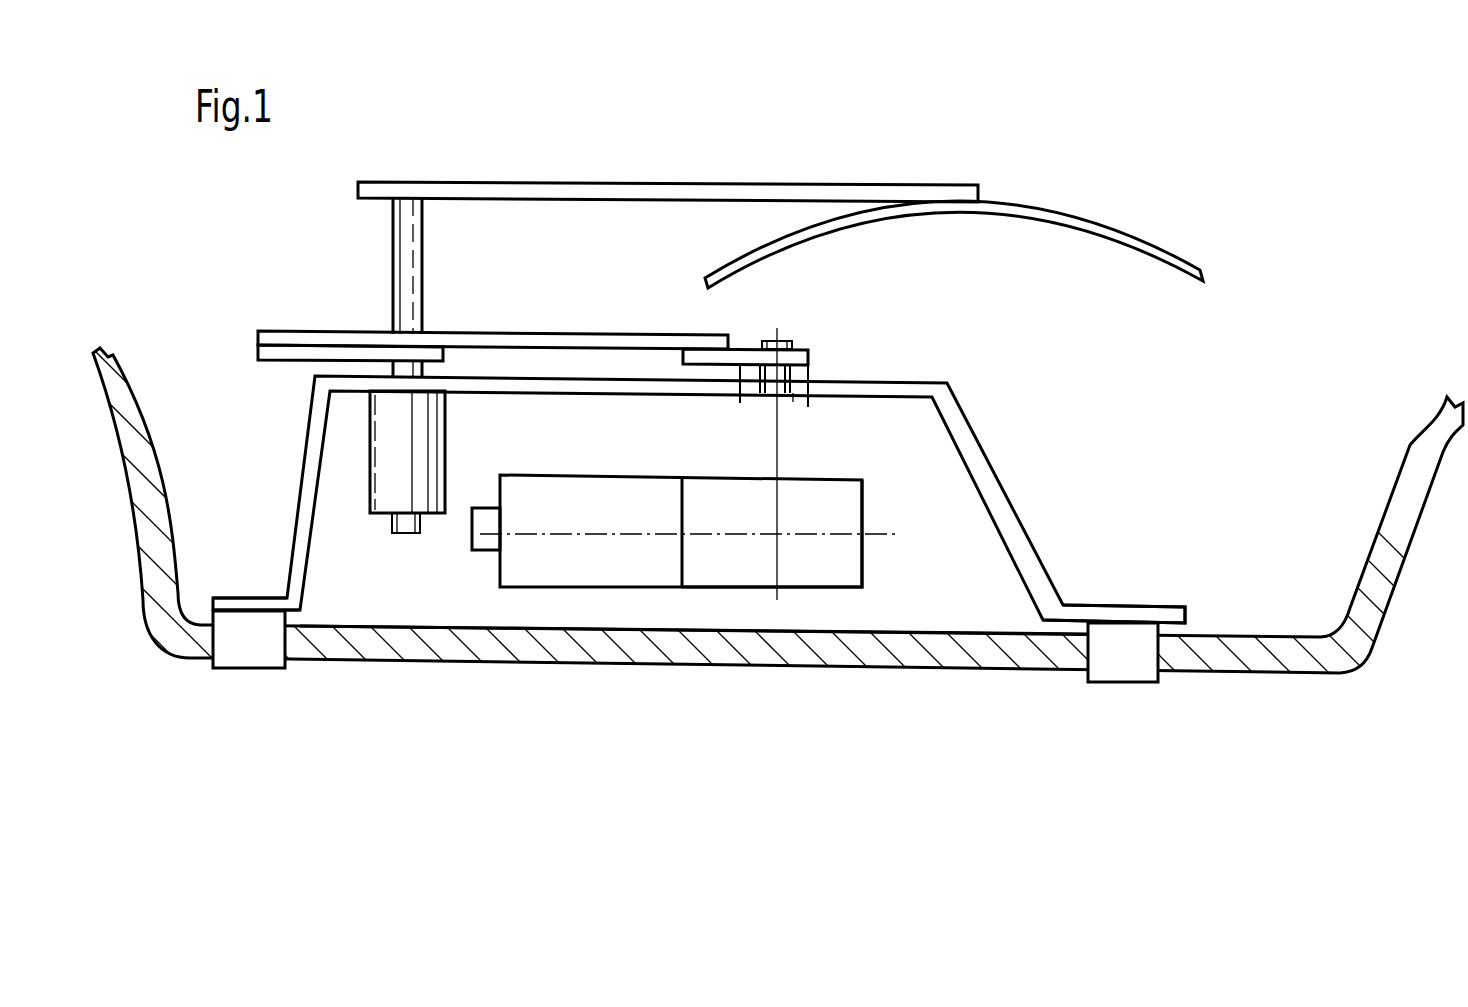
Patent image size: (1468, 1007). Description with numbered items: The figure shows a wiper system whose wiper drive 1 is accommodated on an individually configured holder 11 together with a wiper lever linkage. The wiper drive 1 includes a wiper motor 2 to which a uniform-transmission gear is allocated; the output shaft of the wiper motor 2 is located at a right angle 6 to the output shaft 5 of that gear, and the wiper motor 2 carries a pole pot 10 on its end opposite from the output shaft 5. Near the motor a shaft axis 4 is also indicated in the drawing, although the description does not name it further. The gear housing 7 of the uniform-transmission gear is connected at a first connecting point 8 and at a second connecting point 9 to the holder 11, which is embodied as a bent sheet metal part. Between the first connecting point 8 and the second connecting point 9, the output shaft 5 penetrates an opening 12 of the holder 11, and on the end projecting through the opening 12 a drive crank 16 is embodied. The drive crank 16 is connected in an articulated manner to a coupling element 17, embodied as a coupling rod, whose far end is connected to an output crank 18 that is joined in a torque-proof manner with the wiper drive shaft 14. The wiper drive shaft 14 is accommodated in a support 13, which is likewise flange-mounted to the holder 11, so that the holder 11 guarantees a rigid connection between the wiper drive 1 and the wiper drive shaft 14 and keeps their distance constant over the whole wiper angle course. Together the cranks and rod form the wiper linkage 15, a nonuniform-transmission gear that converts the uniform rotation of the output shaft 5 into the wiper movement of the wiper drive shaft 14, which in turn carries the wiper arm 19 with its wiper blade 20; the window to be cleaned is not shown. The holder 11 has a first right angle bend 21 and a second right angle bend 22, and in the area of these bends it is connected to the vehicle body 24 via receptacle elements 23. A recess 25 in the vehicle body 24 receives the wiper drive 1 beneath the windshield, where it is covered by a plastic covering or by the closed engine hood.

The wiper drive 1 is at (908, 515).
The wiper motor 2 is at (540, 490).
The motor shaft axis 4 is at (705, 525).
The output shaft 5 is at (778, 330).
The right angle 6 is at (762, 518).
The gear housing 7 is at (875, 560).
The first connecting point 8 is at (808, 373).
The second connecting point 9 is at (738, 396).
The pole pot 10 is at (480, 507).
The holder 11 is at (960, 420).
The opening 12 is at (794, 403).
The support 13 is at (375, 497).
The wiper drive shaft 14 is at (400, 263).
The wiper linkage 15 is at (624, 310).
The drive crank 16 is at (745, 355).
The coupling element 17 is at (516, 340).
The output crank 18 is at (293, 352).
The wiper arm 19 is at (550, 182).
The wiper blade 20 is at (1110, 238).
The first right angle bend 21 is at (1138, 607).
The second right angle bend 22 is at (265, 598).
The receptacle elements 23 is at (232, 668).
The vehicle body 24 is at (738, 652).
The recess 25 is at (188, 402).